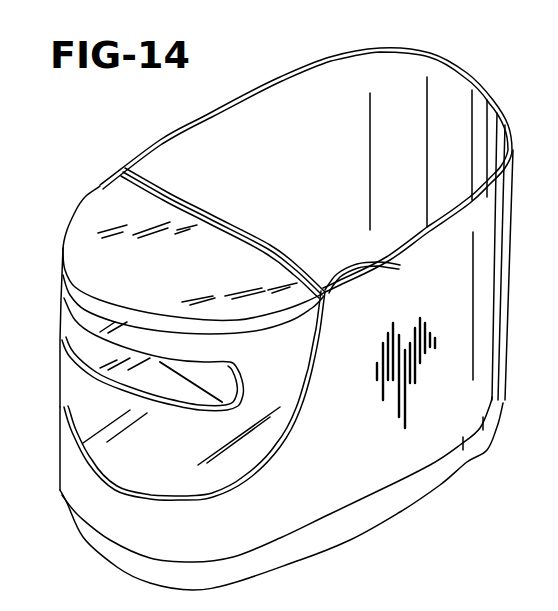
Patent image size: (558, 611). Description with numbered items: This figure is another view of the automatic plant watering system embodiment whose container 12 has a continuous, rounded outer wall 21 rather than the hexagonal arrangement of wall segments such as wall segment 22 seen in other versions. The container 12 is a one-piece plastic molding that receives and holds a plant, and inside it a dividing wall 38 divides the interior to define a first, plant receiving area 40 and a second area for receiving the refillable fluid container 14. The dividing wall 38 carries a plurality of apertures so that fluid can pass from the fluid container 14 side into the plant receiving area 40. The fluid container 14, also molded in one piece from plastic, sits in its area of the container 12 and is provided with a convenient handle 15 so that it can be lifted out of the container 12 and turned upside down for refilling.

The container 12 is at (503, 373).
The fluid container 14 is at (84, 203).
The handle 15 is at (140, 331).
The outer wall 21 is at (460, 68).
The wall segment 22 is at (487, 328).
The dividing wall 38 is at (158, 187).
The plant receiving area 40 is at (270, 110).